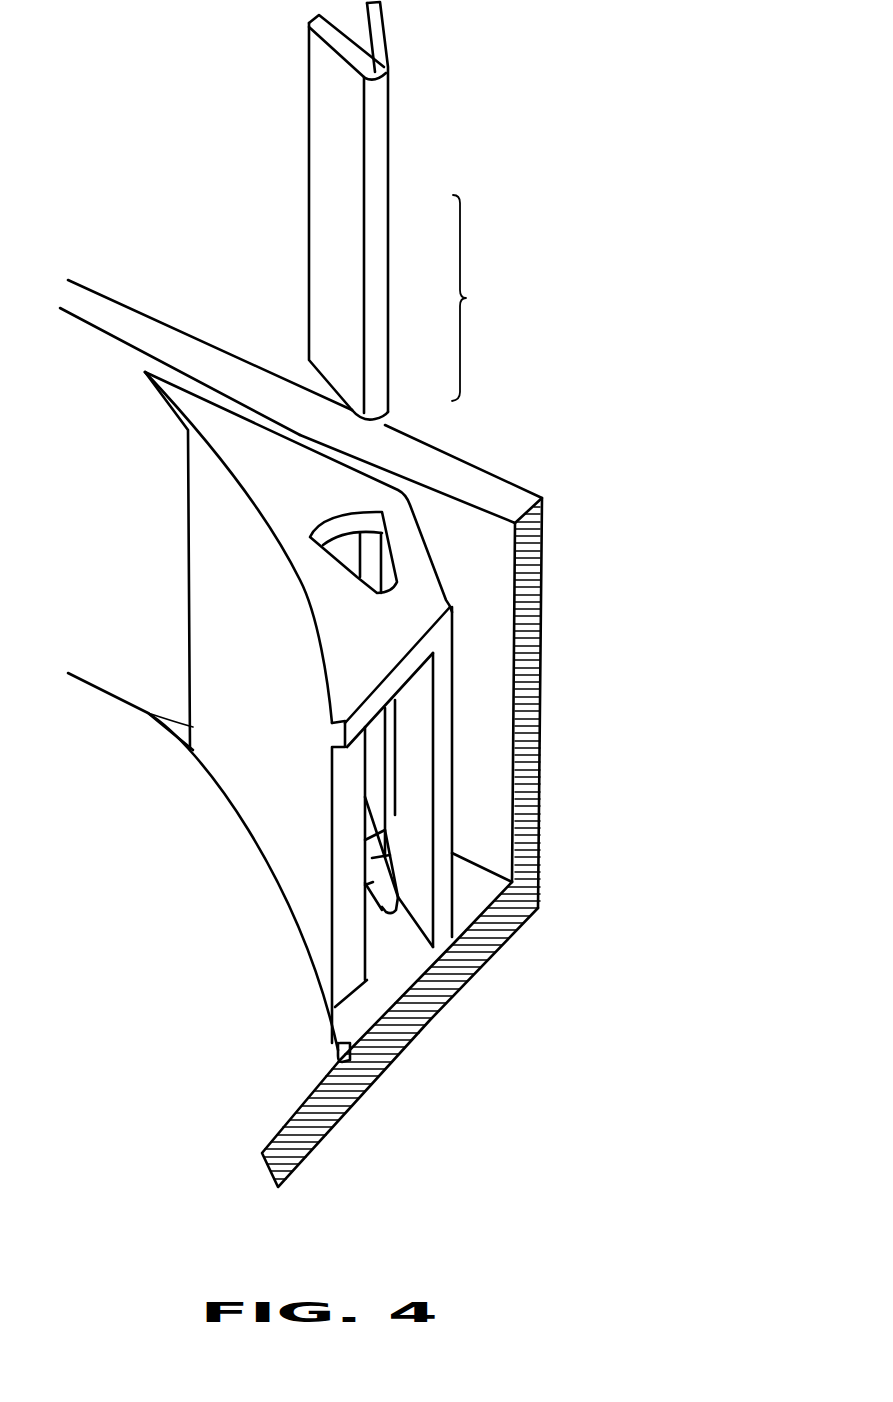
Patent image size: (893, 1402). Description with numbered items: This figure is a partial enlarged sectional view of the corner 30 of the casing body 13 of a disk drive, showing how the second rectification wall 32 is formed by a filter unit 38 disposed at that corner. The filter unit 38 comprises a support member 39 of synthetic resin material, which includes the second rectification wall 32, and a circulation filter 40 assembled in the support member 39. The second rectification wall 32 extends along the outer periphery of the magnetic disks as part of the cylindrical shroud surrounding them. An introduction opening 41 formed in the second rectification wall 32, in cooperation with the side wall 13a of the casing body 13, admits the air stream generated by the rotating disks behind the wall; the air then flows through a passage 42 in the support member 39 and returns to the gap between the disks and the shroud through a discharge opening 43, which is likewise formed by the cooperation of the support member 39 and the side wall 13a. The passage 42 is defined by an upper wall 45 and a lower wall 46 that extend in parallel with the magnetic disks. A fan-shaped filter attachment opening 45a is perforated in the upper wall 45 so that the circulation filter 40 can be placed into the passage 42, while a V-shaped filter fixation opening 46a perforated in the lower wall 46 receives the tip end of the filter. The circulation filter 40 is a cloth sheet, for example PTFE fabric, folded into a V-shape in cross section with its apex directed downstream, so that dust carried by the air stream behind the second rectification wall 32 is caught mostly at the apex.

The casing body 13 is at (543, 712).
The side wall 13a is at (120, 305).
The corner 30 is at (484, 526).
The second rectification wall 32 is at (275, 707).
The filter unit 38 is at (479, 298).
The support member 39 is at (353, 475).
The circulation filter 40 is at (386, 237).
The introduction opening 41 is at (180, 528).
The passage 42 is at (412, 737).
The discharge opening 43 is at (343, 836).
The upper wall 45 is at (305, 497).
The filter attachment opening 45a is at (337, 562).
The lower wall 46 is at (412, 968).
The filter fixation opening 46a is at (390, 914).